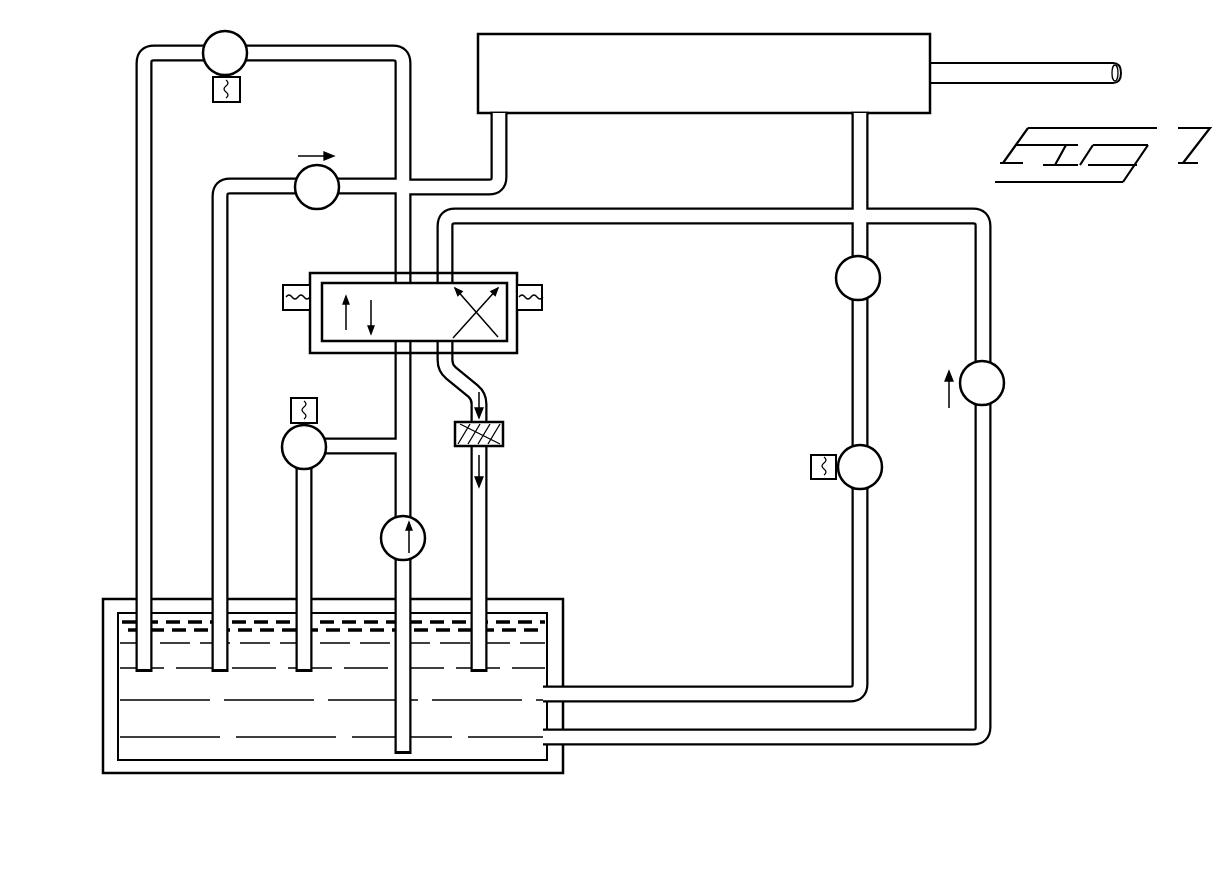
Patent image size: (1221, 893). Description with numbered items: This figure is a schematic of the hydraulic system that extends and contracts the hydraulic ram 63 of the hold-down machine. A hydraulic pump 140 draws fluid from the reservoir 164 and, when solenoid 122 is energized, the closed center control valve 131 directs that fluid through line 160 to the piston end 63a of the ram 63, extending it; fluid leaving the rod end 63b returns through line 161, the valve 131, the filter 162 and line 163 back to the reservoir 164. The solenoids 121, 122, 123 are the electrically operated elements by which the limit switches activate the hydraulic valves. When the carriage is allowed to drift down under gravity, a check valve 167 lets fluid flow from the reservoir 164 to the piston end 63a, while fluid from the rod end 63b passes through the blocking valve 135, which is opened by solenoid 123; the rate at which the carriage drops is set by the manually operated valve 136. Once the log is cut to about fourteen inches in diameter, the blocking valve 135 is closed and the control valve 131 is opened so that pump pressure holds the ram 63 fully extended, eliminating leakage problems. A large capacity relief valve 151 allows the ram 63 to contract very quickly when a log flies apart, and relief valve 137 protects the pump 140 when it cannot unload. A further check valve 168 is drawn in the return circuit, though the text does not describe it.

The hydraulic ram 63 is at (752, 38).
The piston end 63a is at (478, 80).
The rod end 63b is at (932, 99).
The solenoid 121 is at (543, 298).
The solenoid 122 is at (284, 309).
The solenoid 123 is at (812, 479).
The closed center control valve 131 is at (348, 266).
The blocking valve 135 is at (876, 485).
The manually operated valve 136 is at (848, 295).
The relief valve 137 is at (287, 439).
The hydraulic pump 140 is at (388, 554).
The large capacity relief valve 151 is at (243, 40).
The line 160 is at (507, 160).
The line 161 is at (851, 171).
The filter 162 is at (504, 437).
The line 163 is at (488, 500).
The reservoir 164 is at (549, 612).
The check valve 167 is at (302, 172).
The check valve 168 is at (1004, 386).